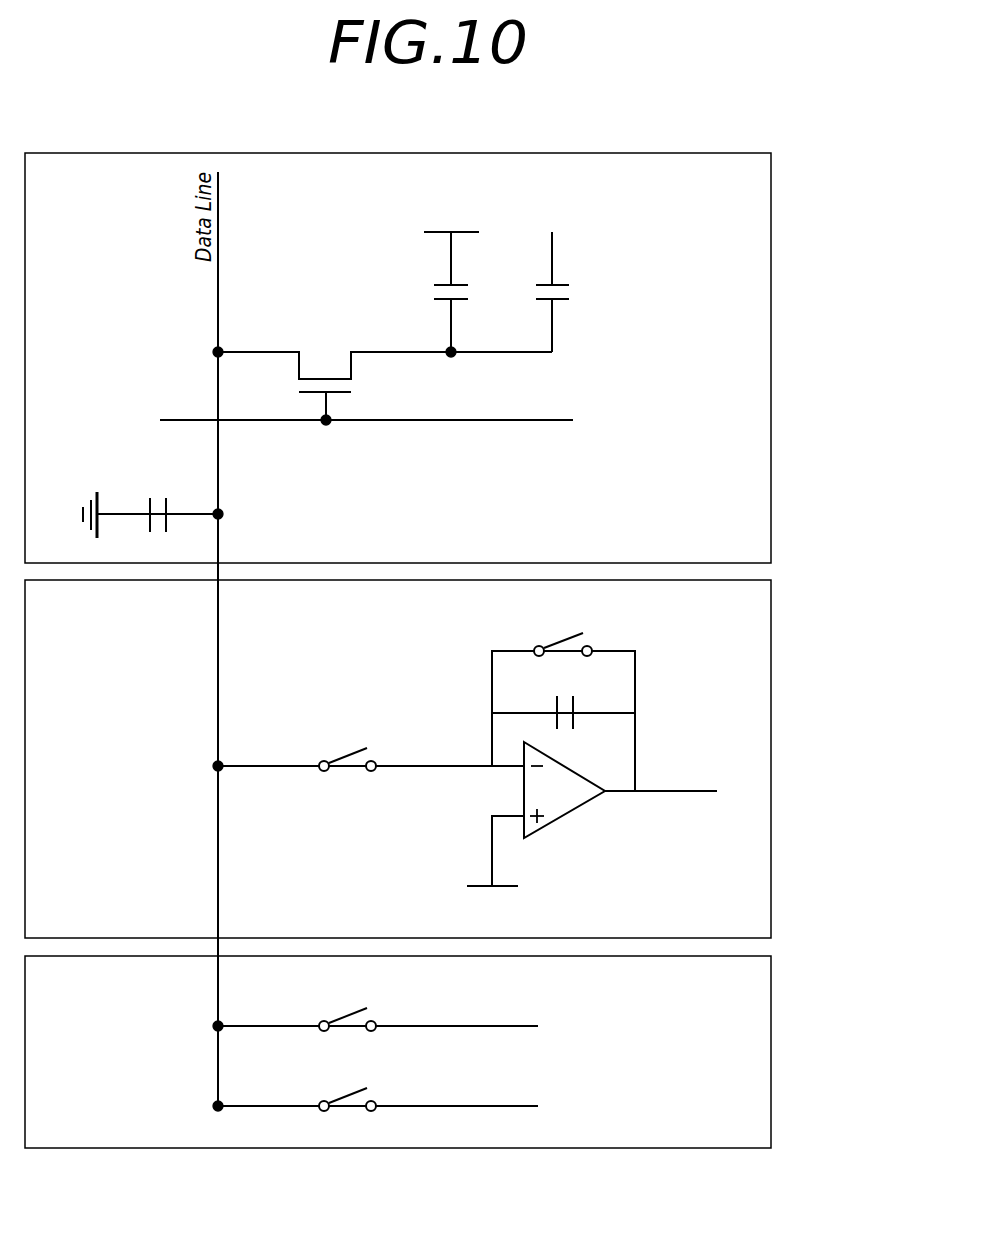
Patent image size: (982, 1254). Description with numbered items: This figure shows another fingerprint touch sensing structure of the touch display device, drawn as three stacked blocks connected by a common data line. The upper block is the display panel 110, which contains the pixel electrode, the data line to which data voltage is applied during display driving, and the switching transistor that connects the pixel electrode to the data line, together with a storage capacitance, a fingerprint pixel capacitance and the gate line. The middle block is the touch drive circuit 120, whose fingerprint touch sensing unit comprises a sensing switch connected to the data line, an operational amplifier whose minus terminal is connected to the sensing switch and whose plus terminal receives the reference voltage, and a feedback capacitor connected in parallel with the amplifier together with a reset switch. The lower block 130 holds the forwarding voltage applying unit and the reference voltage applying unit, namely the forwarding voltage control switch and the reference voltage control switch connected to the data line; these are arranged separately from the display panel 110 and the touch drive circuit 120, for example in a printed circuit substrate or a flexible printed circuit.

The display panel 110 is at (771, 228).
The touch drive circuit 120 is at (771, 626).
The voltage supply switching circuit 130 is at (772, 965).